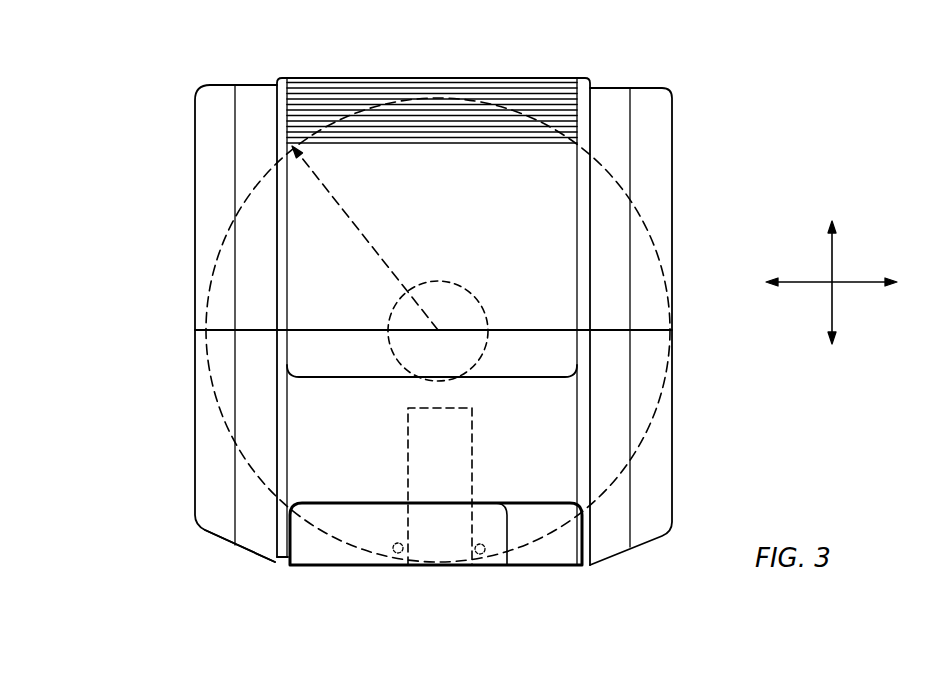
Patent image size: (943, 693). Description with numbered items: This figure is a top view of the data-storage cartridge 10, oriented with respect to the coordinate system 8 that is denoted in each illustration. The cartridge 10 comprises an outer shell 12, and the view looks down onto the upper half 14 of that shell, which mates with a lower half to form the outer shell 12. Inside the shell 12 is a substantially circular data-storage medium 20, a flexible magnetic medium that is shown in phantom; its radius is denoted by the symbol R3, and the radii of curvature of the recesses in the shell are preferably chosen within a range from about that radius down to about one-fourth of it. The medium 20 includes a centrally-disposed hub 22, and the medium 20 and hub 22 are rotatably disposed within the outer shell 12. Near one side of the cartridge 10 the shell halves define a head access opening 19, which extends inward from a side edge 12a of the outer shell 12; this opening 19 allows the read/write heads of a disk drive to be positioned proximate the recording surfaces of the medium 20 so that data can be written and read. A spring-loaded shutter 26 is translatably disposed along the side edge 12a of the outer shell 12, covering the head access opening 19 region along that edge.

The data-storage cartridge 10 is at (150, 187).
The outer shell 12 is at (690, 160).
The side edge 12a is at (282, 562).
The upper half 14 is at (614, 98).
The data-storage medium 20 is at (637, 450).
The radius of the data-storage medium R3 is at (333, 198).
The hub 22 is at (457, 305).
The head access opening 19 is at (470, 428).
The spring-loaded shutter 26 is at (483, 568).
The coordinate system 8 is at (832, 282).